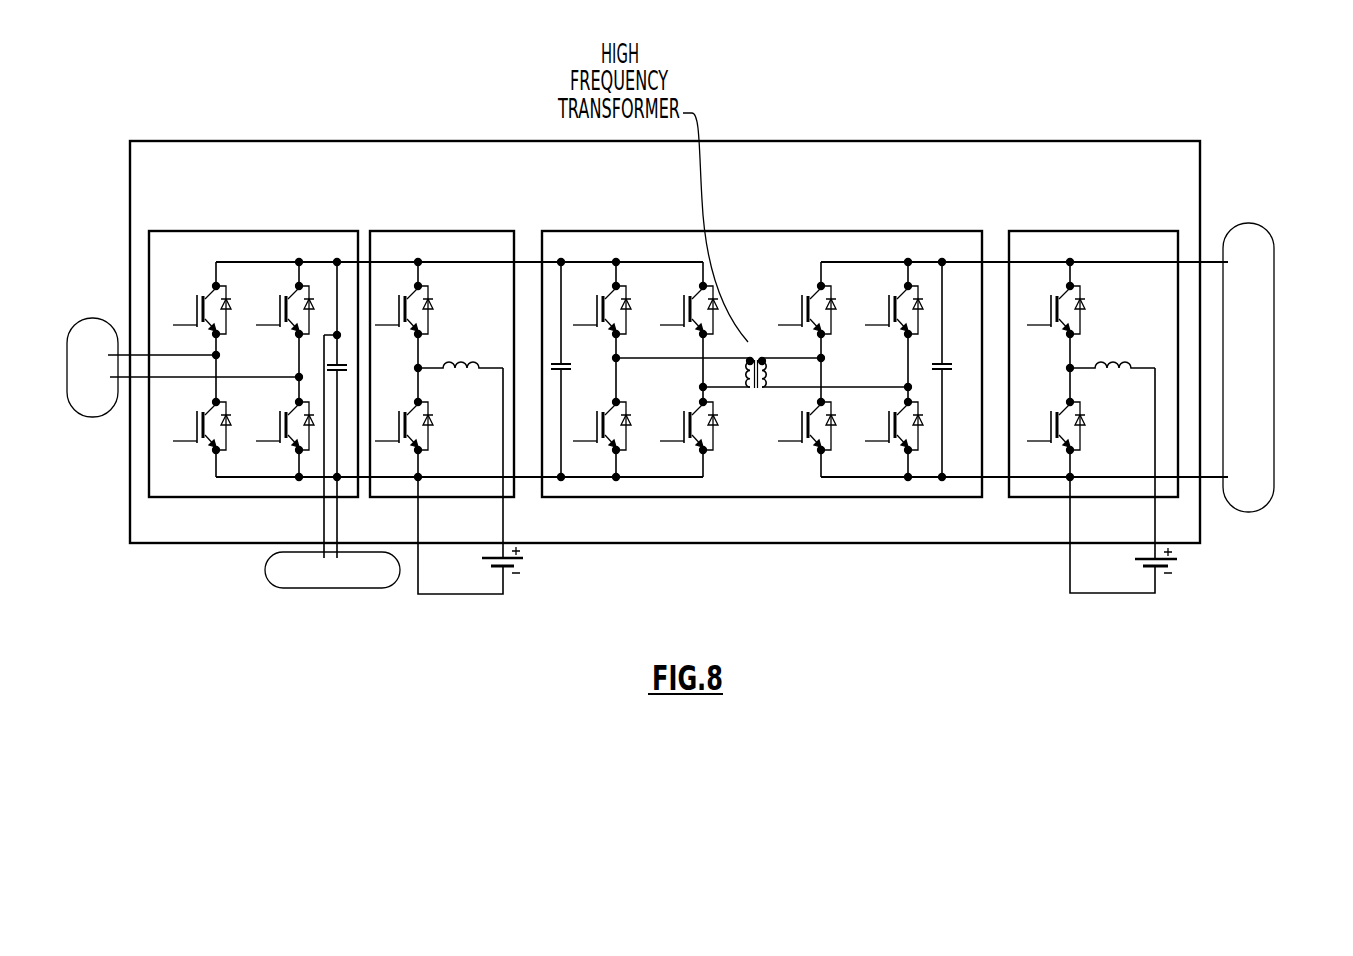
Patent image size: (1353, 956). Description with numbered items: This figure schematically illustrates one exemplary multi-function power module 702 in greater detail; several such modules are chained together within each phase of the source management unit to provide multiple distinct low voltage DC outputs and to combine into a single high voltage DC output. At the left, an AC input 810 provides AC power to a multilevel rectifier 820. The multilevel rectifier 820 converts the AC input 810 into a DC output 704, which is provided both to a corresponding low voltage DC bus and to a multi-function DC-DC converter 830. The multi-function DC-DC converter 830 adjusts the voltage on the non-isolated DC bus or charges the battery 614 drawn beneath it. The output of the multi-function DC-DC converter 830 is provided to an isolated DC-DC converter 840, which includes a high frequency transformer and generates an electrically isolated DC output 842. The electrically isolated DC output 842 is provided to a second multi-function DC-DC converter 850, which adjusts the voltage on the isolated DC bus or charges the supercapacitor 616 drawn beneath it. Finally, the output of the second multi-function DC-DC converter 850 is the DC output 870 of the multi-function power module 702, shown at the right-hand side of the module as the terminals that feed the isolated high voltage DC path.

The multi-function power module 702 is at (165, 118).
The AC input 810 is at (93, 318).
The multilevel rectifier 820 is at (323, 231).
The multi-function DC-DC converter 830 is at (516, 232).
The isolated DC-DC converter 840 is at (868, 231).
The electrically isolated DC output 842 is at (996, 262).
The second multi-function DC-DC converter 850 is at (1180, 236).
The DC output 870 is at (1275, 326).
The DC output 704 is at (292, 590).
The battery 614 is at (522, 568).
The supercapacitor 616 is at (1177, 568).